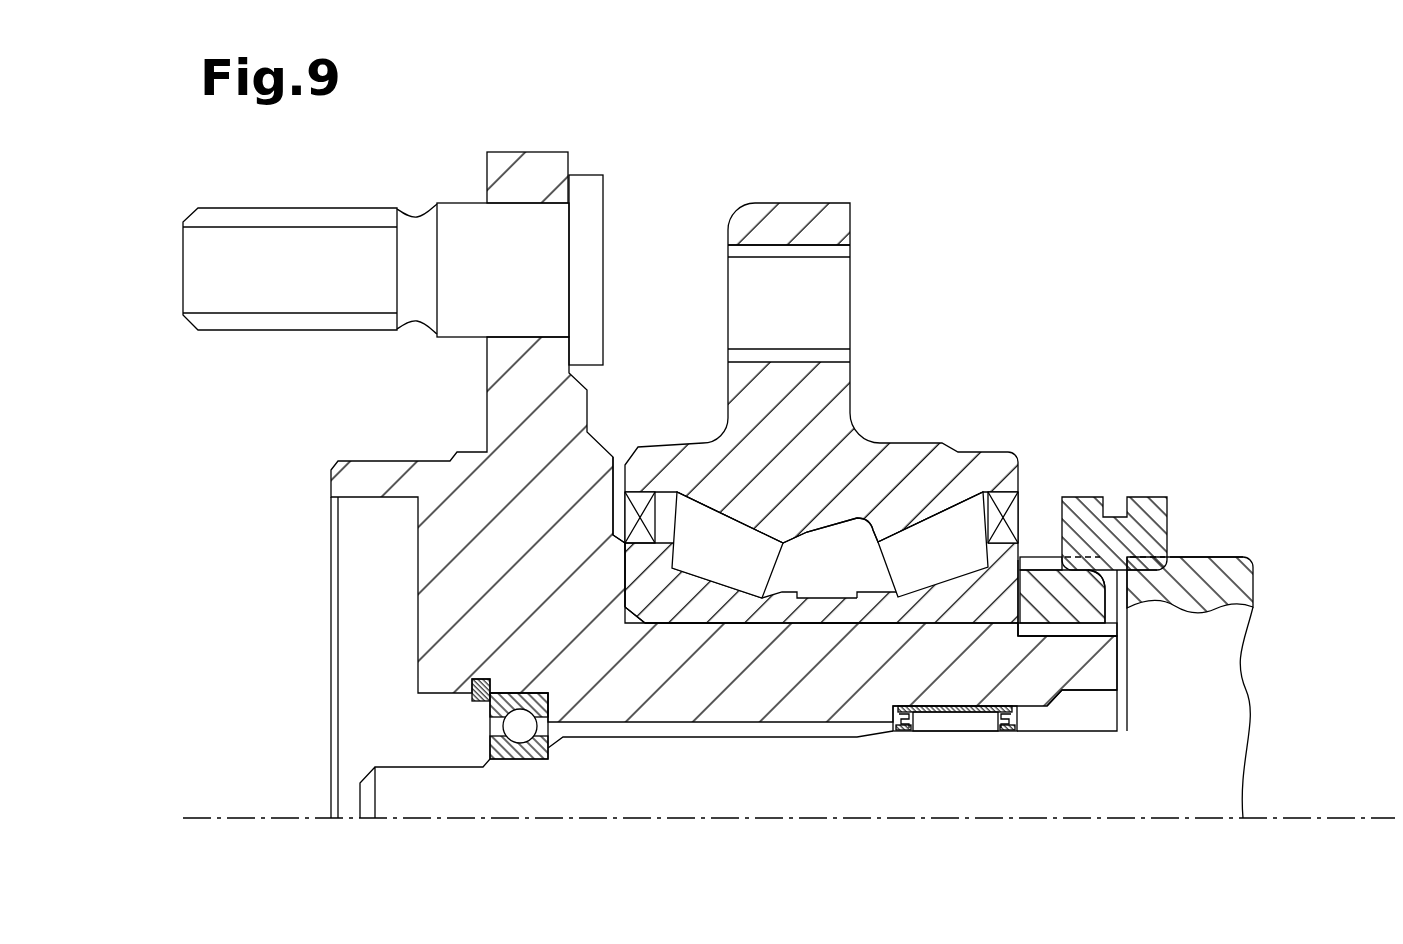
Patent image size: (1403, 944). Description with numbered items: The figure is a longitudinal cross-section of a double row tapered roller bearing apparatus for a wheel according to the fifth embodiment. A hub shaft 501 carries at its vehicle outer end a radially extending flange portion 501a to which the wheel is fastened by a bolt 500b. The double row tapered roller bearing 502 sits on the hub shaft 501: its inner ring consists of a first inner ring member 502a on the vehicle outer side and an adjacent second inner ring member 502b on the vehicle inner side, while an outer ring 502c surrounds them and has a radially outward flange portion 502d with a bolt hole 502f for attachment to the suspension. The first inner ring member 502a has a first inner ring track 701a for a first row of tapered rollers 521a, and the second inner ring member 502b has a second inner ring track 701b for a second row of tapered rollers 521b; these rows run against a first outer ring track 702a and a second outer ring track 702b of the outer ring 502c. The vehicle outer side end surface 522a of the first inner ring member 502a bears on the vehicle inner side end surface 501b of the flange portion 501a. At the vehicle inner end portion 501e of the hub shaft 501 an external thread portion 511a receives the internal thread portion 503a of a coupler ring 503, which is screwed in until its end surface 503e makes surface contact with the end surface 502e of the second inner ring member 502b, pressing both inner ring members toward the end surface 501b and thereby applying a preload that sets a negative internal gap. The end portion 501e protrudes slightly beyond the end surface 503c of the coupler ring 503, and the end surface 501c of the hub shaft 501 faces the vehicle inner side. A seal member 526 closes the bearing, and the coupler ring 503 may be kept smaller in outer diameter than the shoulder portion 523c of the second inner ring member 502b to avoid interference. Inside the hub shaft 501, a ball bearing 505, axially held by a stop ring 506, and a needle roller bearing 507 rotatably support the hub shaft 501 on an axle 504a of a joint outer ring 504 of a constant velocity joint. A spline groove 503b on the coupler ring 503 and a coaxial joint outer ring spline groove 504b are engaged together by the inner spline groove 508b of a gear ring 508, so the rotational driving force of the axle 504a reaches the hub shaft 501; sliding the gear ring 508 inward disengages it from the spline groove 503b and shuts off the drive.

The bolt 500b is at (327, 238).
The hub shaft 501 is at (400, 445).
The flange portion 501a is at (538, 162).
The vehicle inner side end surface 501b is at (622, 548).
The end surface 501c is at (1122, 677).
The end portion 501e is at (1040, 690).
The double row tapered roller bearing 502 is at (903, 430).
The first inner ring member 502a is at (683, 612).
The second inner ring member 502b is at (877, 623).
The outer ring 502c is at (742, 372).
The flange portion 502d is at (792, 210).
The end surface 502e is at (1025, 593).
The bolt hole 502f is at (827, 250).
The coupler ring 503 is at (1035, 556).
The internal thread portion 503a is at (1108, 640).
The spline groove 503b is at (1050, 556).
The end surface 503c is at (1113, 607).
The end surface 503e is at (1015, 625).
The joint outer ring 504 is at (1253, 572).
The axle 504a is at (655, 800).
The joint outer ring spline groove 504b is at (1193, 560).
The ball bearing 505 is at (507, 763).
The stop ring 506 is at (478, 703).
The needle roller bearing 507 is at (957, 722).
The gear ring 508 is at (1163, 510).
The spline groove 508b is at (1142, 565).
The external thread portion 511a is at (1065, 628).
The first row of tapered rollers 521a is at (683, 530).
The second row of tapered rollers 521b is at (917, 507).
The vehicle outer side end surface 522a is at (620, 588).
The shoulder portion 523c is at (980, 537).
The seal member 526 is at (1000, 493).
The first inner ring track 701a is at (738, 585).
The second inner ring track 701b is at (948, 577).
The first outer ring track 702a is at (727, 522).
The second outer ring track 702b is at (925, 518).